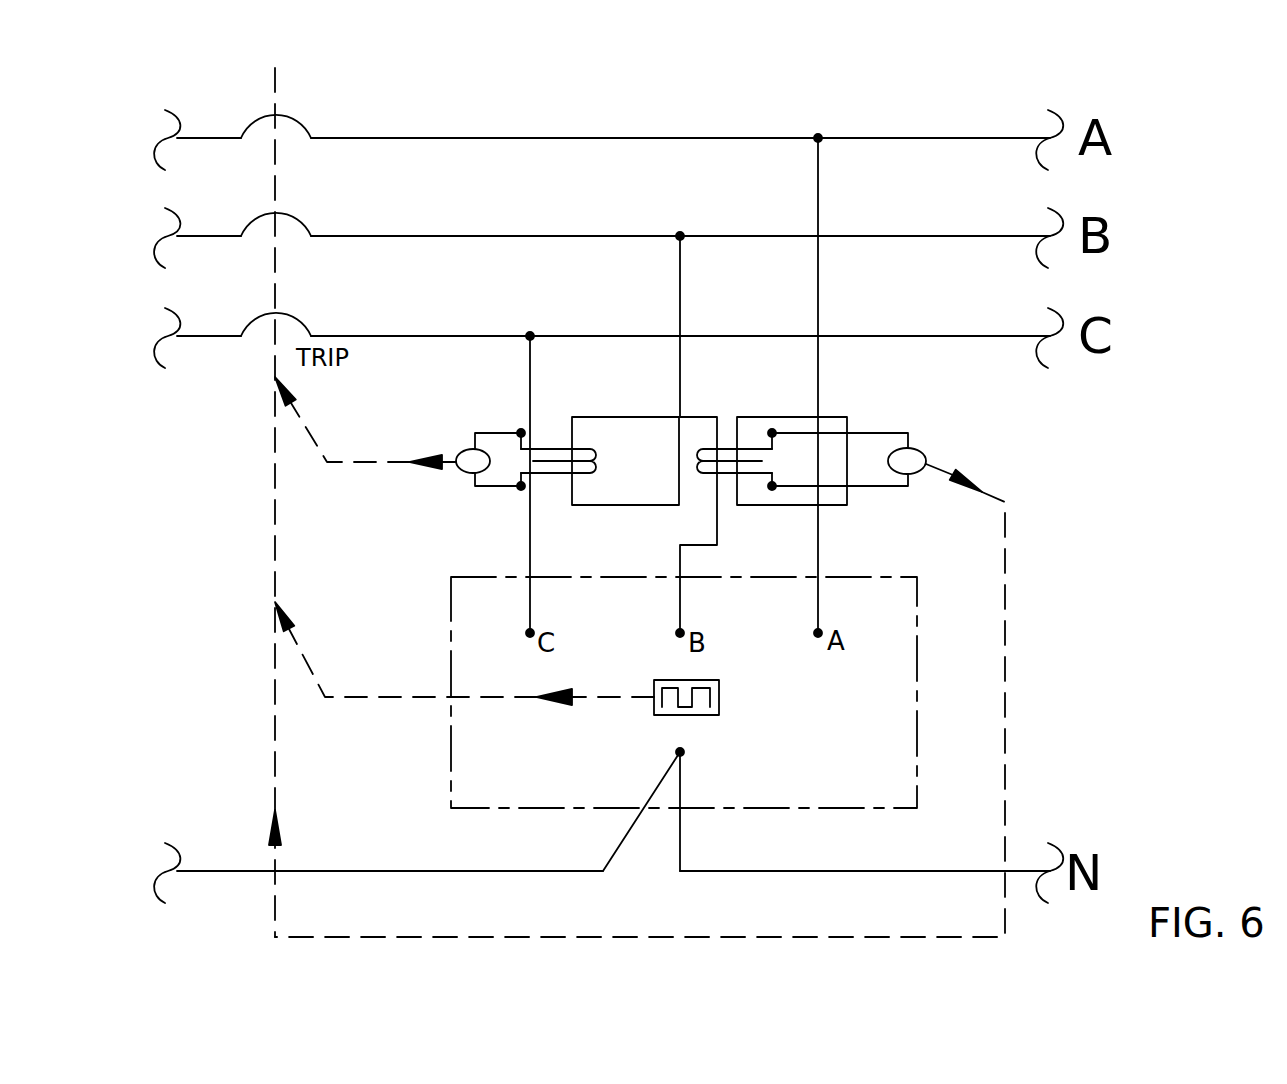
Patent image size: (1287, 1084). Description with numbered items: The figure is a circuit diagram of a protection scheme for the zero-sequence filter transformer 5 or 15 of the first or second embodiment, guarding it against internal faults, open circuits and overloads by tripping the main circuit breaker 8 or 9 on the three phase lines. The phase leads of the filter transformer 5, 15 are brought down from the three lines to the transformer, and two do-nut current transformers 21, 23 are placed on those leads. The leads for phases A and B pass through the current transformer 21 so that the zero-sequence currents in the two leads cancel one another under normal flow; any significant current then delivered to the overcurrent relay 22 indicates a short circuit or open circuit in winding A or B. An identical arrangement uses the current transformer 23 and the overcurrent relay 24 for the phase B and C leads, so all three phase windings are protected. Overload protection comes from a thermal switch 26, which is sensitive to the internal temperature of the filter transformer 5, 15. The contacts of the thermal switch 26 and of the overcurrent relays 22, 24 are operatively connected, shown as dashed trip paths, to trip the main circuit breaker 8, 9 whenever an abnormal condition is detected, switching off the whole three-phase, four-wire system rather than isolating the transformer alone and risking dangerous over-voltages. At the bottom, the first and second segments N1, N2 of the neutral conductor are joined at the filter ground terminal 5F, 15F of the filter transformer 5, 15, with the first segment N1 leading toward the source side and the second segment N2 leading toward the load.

The main circuit breaker 8 is at (311, 502).
The main circuit breaker 9 is at (298, 107).
The current transformer 21 is at (695, 426).
The overcurrent relay 22 is at (933, 426).
The current transformer 23 is at (612, 435).
The overcurrent relay 24 is at (450, 500).
The thermal switch 26 is at (720, 668).
The zero-sequence filter transformer 5 is at (765, 692).
The zero-sequence filter transformer 15 is at (934, 697).
The filter ground terminal 5F is at (724, 804).
The filter ground terminal 15F is at (707, 742).
The first segment of the neutral conductor N1 is at (468, 853).
The second segment of the neutral conductor N2 is at (892, 853).